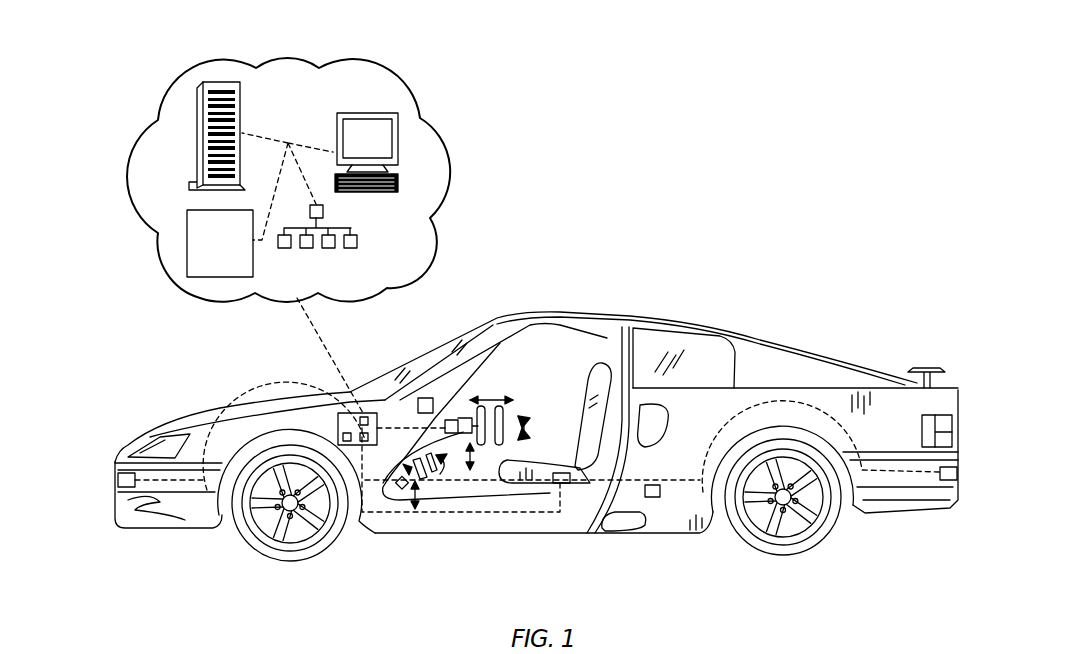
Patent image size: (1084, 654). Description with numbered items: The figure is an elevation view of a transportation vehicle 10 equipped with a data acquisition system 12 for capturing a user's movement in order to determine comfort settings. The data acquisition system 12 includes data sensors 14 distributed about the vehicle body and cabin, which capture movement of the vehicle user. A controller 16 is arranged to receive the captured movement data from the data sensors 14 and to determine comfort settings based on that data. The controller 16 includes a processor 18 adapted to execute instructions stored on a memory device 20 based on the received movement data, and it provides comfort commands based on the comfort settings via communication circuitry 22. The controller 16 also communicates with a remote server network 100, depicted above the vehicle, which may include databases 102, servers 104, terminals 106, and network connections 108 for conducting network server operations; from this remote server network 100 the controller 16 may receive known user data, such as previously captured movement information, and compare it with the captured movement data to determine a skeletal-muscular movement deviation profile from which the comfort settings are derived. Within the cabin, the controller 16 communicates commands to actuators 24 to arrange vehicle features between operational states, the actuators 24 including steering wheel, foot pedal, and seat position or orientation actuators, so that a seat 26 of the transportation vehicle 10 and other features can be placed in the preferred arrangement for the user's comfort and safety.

The transportation vehicle 10 is at (638, 296).
The data acquisition system 12 is at (107, 430).
The data sensors 14 is at (115, 482).
The controller 16 is at (361, 413).
The processor 18 is at (293, 505).
The memory device 20 is at (333, 371).
The communication circuitry 22 is at (368, 418).
The actuators 24 is at (455, 420).
The seat 26 is at (577, 393).
The remote server network 100 is at (284, 98).
The databases 102 is at (217, 260).
The servers 104 is at (200, 95).
The terminals 106 is at (355, 112).
The network connections 108 is at (323, 208).